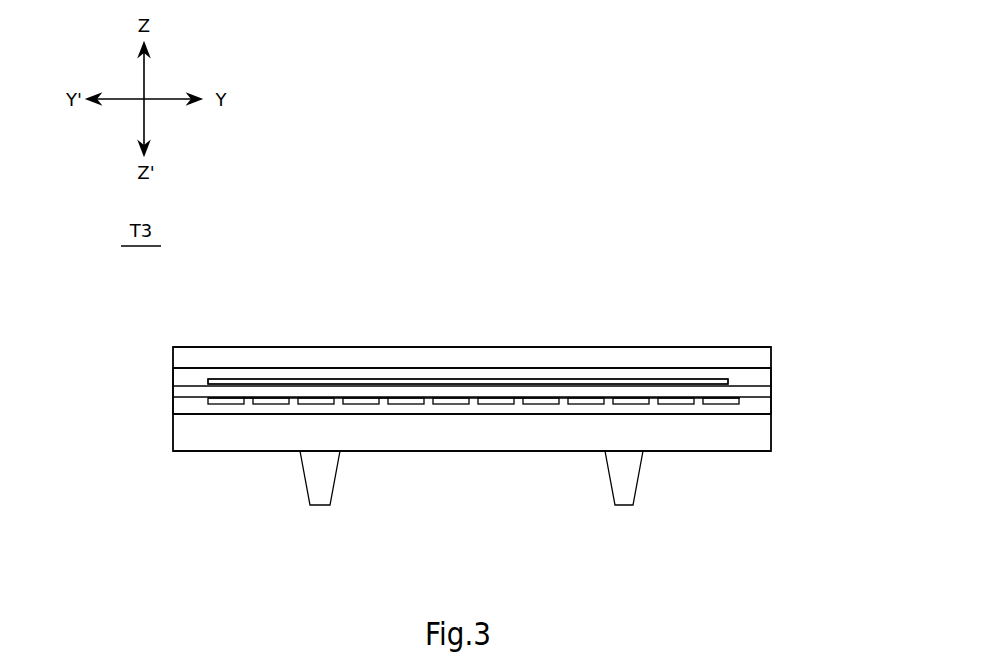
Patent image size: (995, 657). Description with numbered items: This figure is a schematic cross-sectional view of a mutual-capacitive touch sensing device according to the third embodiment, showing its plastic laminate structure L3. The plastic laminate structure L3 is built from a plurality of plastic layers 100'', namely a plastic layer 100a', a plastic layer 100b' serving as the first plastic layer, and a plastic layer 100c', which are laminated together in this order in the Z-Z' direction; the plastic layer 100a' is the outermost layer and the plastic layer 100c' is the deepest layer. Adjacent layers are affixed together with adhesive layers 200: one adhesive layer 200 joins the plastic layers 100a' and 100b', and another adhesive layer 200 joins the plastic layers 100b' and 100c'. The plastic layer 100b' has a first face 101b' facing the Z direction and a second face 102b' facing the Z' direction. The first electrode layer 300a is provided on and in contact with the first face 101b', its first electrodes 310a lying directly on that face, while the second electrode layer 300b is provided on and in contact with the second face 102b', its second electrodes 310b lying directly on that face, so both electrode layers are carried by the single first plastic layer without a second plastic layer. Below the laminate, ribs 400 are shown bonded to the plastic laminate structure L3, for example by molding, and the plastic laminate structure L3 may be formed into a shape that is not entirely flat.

The plastic layers 100'' is at (403, 402).
The plastic layer 100a' is at (434, 355).
The plastic layer (first plastic layer) 100b' is at (434, 390).
The plastic layer 100c' is at (434, 435).
The first face 101b' is at (472, 334).
The second face 102b' is at (472, 453).
The plastic laminate structure L3 is at (316, 333).
The adhesive layers 200 is at (560, 370).
The first electrode layer 300a is at (731, 377).
The second electrode layer 300b is at (745, 400).
The first electrodes 310a is at (421, 382).
The second electrodes 310b is at (366, 404).
The ribs 400 is at (320, 494).